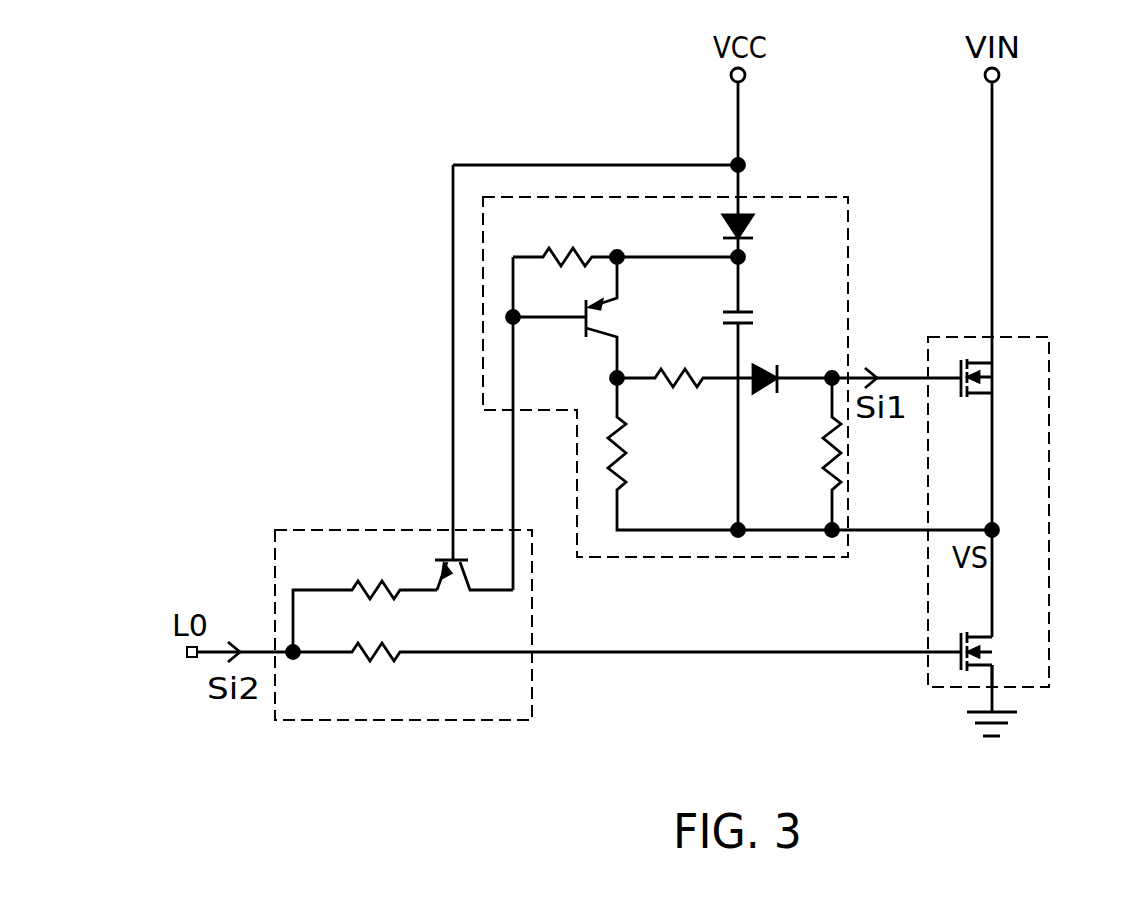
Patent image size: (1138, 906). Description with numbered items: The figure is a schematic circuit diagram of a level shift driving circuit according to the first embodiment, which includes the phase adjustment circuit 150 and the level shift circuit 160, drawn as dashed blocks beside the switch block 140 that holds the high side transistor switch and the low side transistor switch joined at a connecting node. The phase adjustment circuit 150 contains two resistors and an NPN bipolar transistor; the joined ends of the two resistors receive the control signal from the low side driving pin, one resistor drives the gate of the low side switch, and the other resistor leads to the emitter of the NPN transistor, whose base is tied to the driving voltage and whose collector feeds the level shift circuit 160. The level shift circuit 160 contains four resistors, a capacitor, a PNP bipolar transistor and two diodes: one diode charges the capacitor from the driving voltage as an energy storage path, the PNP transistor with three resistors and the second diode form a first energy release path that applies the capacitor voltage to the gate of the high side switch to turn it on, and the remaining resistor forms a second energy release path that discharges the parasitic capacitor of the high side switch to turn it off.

The switch circuit (transistors T1, T2) 140 is at (1022, 335).
The phase adjustment circuit 150 is at (305, 530).
The level shift circuit 160 is at (806, 196).